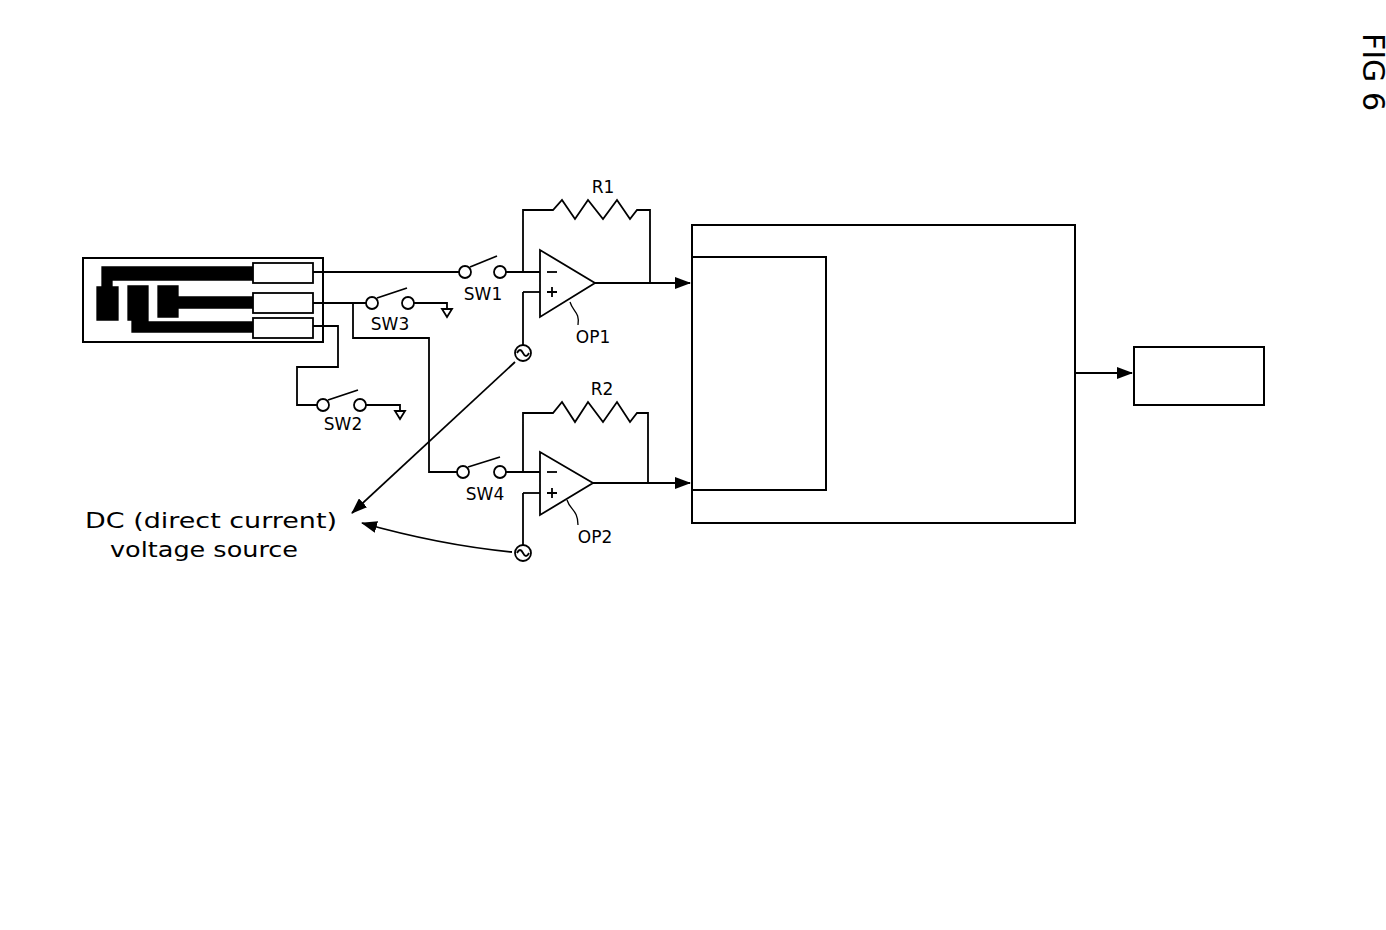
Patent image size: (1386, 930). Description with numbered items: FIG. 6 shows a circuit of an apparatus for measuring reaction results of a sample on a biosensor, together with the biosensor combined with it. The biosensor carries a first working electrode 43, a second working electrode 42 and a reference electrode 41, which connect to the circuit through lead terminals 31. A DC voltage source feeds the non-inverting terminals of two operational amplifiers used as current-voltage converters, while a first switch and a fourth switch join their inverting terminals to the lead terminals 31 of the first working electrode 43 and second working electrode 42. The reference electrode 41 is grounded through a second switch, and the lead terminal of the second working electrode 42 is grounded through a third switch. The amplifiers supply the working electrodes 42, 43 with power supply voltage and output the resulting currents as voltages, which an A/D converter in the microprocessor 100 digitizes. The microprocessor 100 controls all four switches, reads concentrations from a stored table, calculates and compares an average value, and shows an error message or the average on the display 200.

The lead terminals 31 is at (283, 263).
The reference electrode 41 is at (130, 318).
The second working electrode 42 is at (183, 313).
The first working electrode 43 is at (98, 290).
The microprocessor 100 is at (853, 523).
The display 200 is at (1200, 405).